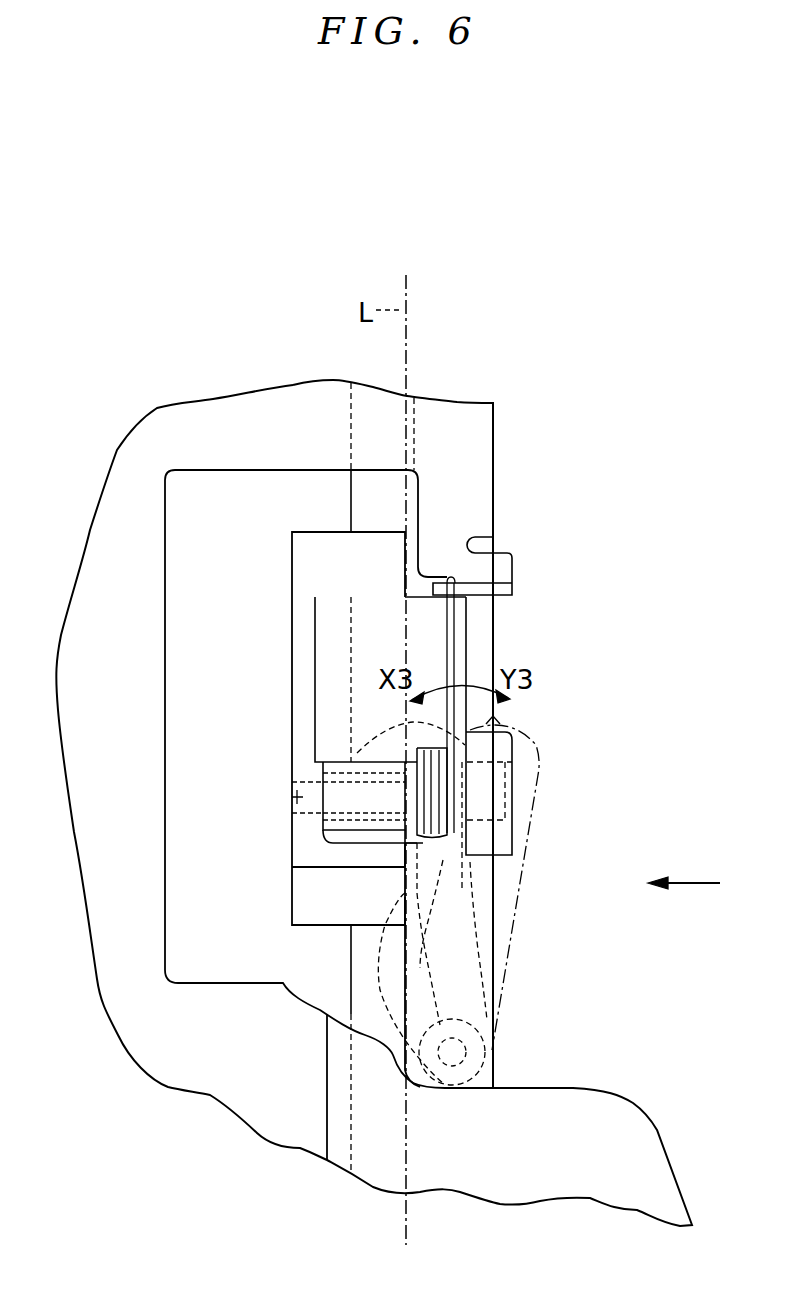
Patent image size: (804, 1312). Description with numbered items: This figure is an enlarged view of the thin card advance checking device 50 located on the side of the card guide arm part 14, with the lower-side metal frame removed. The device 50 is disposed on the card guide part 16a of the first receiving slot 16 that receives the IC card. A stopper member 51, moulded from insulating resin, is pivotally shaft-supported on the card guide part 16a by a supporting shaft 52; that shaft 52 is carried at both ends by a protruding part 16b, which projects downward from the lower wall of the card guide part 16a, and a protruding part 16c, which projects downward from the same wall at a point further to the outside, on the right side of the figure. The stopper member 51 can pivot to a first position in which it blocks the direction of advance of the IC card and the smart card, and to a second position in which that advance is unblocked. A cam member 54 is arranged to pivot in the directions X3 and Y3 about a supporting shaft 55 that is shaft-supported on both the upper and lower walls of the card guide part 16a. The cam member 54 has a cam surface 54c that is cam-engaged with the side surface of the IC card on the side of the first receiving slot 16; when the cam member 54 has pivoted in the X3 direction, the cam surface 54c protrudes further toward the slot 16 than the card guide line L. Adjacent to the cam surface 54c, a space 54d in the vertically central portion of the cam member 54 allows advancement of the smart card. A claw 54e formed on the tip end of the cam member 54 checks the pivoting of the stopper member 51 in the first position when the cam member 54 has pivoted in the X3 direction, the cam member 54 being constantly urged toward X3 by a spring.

The card guide arm part 14 is at (487, 615).
The first receiving slot 16 is at (378, 1153).
The card guide part 16a is at (365, 976).
The protruding part 16b is at (292, 840).
The protruding part 16c is at (505, 840).
The thin card advance checking device 50 is at (367, 937).
The stopper member 51 is at (320, 765).
The supporting shaft 52 is at (295, 797).
The cam member 54 is at (470, 918).
The cam surface 54c is at (385, 990).
The space 54d is at (400, 1030).
The claw 54e is at (375, 762).
The supporting shaft 55 is at (470, 1052).